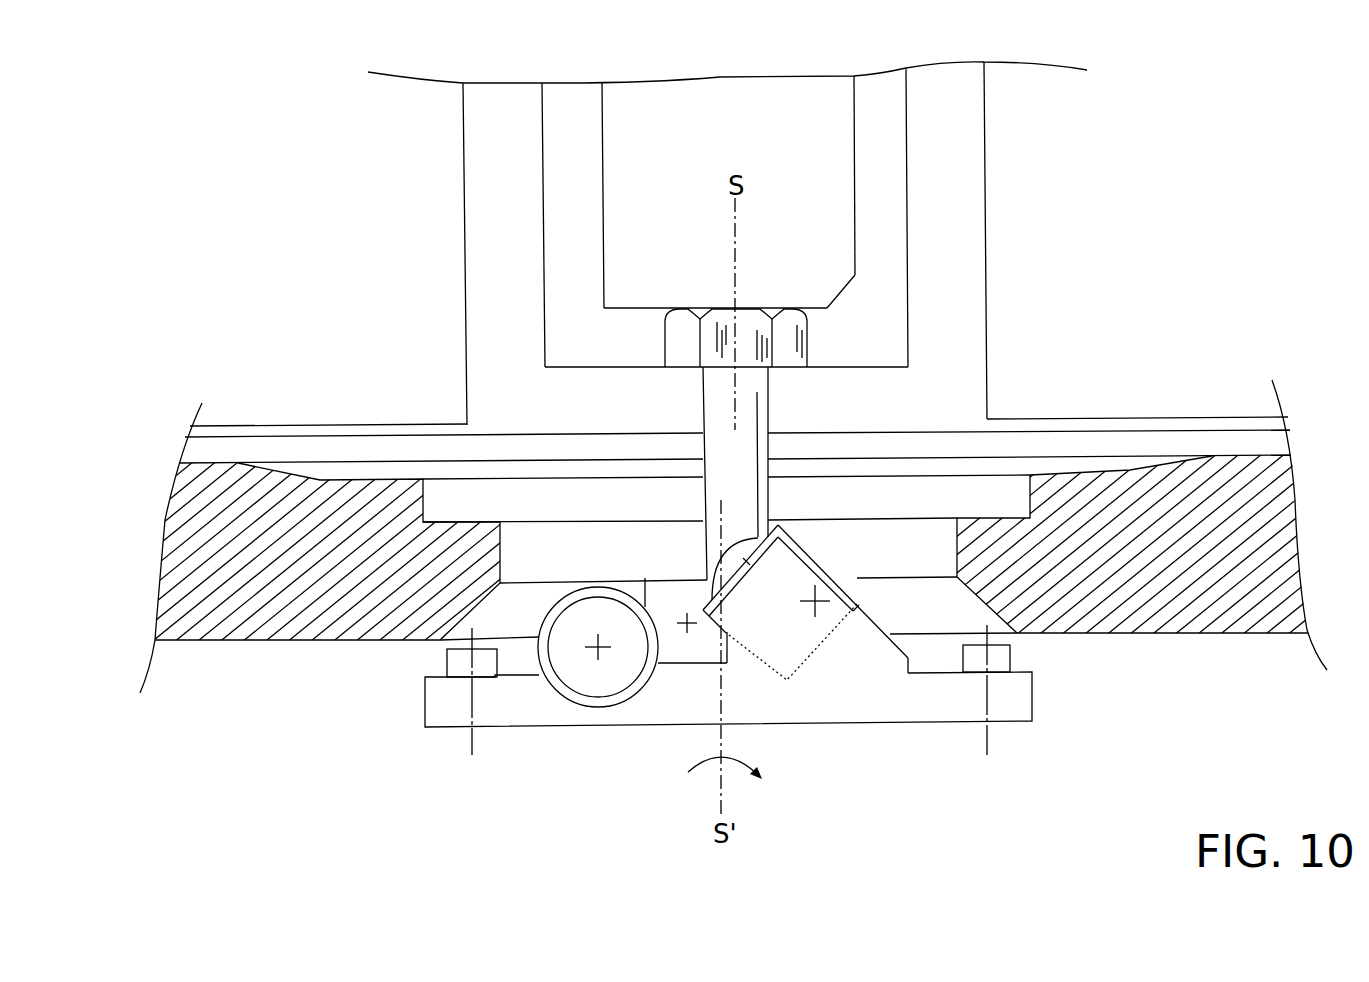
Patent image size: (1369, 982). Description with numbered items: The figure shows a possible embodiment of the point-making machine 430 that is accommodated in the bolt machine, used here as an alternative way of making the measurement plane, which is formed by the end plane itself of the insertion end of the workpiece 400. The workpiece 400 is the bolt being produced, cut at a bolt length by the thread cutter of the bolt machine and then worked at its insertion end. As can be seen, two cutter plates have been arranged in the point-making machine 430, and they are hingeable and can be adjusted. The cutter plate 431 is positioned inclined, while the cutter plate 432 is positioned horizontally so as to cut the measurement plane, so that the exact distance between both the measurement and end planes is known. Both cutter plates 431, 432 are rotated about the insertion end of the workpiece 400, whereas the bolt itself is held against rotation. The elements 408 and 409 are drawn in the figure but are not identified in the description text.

The workpiece 400 is at (747, 427).
The pivot block 408 is at (747, 645).
The angle bracket 409 is at (745, 562).
The point-making machine 430 is at (443, 773).
The cutter plate 431 is at (823, 635).
The cutter plate 432 is at (675, 652).